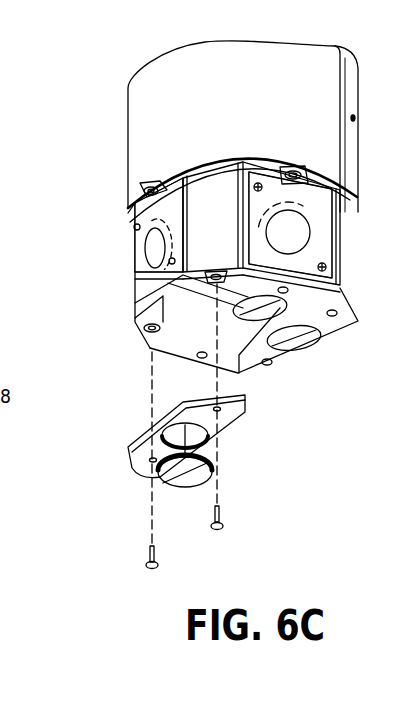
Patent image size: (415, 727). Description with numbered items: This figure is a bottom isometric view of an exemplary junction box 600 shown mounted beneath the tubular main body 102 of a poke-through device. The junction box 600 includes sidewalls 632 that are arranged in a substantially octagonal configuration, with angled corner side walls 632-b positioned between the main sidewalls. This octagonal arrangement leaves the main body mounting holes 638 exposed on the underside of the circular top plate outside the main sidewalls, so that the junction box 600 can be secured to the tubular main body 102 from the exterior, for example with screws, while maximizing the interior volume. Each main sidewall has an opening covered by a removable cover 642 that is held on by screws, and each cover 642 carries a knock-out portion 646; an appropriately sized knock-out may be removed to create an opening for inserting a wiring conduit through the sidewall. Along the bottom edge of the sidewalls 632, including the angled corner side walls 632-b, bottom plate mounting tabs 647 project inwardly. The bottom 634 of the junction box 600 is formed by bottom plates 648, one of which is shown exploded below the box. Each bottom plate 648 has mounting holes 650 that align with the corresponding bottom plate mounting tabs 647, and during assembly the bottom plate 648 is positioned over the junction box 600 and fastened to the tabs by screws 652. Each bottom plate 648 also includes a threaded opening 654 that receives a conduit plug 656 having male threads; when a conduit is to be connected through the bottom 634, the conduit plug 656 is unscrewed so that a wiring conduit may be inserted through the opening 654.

The junction box 600 is at (108, 222).
The tubular main body 102 is at (262, 110).
The main body mounting holes 638 is at (242, 160).
The removable cover 642 is at (138, 242).
The knock-out portion 646 is at (153, 253).
The bottom plate mounting tabs 647 is at (253, 265).
The sidewalls 632 is at (110, 296).
The angled corner side walls 632-b is at (247, 283).
The bottom 634 is at (258, 404).
The mounting holes 650 is at (150, 459).
The bottom plate 648 is at (140, 437).
The opening 654 is at (197, 432).
The conduit plug 656 is at (190, 487).
The screws 652 is at (223, 516).